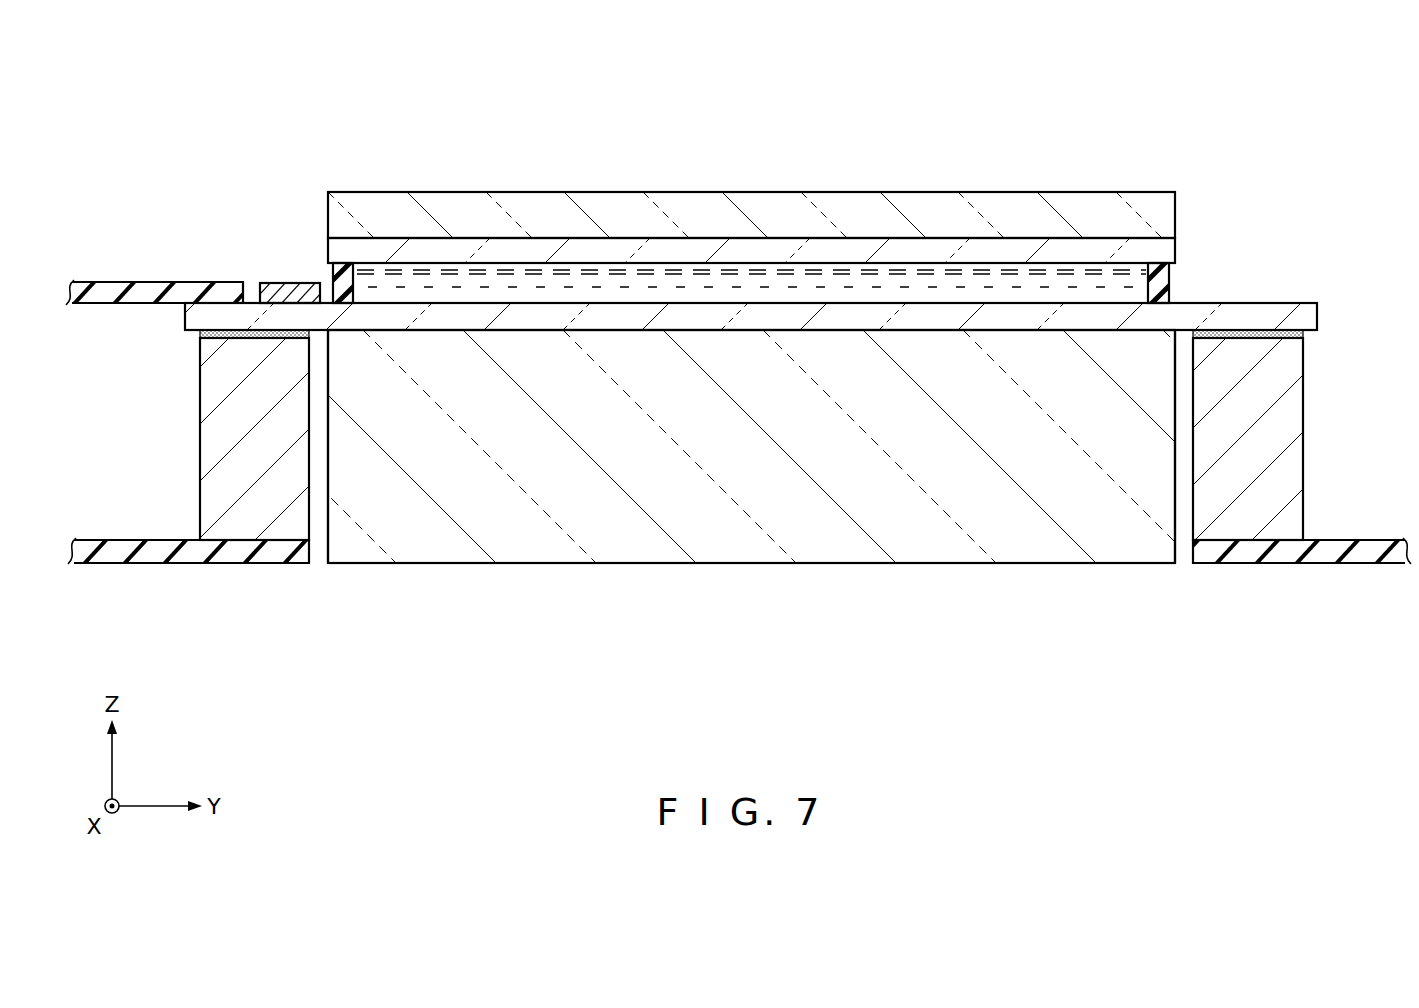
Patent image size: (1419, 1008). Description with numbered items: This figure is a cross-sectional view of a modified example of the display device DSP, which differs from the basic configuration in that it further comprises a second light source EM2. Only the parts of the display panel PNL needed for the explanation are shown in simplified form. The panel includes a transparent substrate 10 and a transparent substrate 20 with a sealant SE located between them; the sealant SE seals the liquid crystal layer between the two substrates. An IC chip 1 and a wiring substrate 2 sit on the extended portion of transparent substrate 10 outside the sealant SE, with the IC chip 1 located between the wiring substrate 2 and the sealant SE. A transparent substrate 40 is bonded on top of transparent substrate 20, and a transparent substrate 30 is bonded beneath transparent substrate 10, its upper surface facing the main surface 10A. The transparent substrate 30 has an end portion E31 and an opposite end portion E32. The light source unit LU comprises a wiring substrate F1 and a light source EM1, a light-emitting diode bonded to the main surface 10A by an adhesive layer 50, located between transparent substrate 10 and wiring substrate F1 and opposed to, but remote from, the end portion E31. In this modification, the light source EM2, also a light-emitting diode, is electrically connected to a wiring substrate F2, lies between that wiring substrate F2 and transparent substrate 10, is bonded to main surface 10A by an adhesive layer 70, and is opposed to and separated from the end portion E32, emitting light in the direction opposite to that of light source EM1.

The display device DSP is at (1332, 160).
The display panel PNL is at (1265, 275).
The light source unit LU is at (243, 601).
The transparent substrate 10 is at (905, 318).
The main surface 10A is at (747, 333).
The transparent substrate 20 is at (895, 248).
The transparent substrate 30 is at (1010, 553).
The transparent substrate 40 is at (1007, 200).
The adhesive layer 50 is at (200, 333).
The adhesive layer 70 is at (1290, 335).
The IC chip 1 is at (270, 290).
The wiring substrate 2 is at (107, 290).
The sealant SE is at (333, 272).
The light source EM1 is at (212, 445).
The light source EM2 is at (1292, 462).
The wiring substrate F1 is at (118, 555).
The wiring substrate F2 is at (1362, 555).
The end portion E31 is at (328, 532).
The end portion E32 is at (1175, 535).